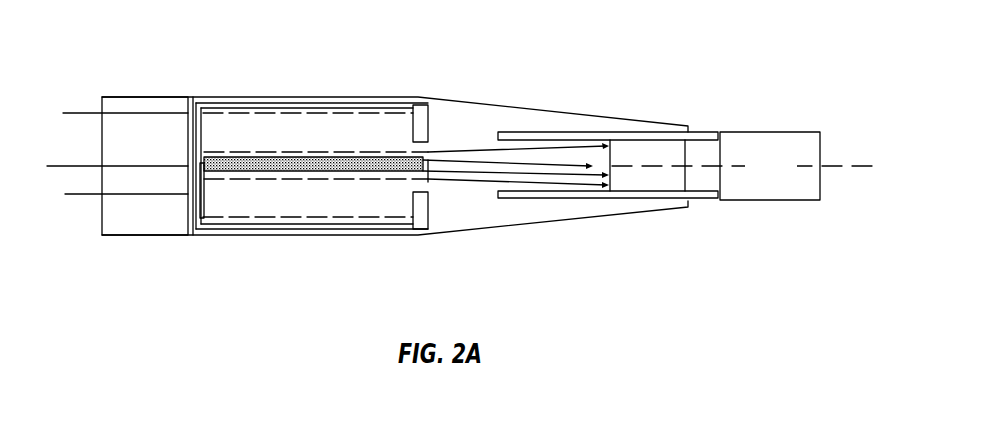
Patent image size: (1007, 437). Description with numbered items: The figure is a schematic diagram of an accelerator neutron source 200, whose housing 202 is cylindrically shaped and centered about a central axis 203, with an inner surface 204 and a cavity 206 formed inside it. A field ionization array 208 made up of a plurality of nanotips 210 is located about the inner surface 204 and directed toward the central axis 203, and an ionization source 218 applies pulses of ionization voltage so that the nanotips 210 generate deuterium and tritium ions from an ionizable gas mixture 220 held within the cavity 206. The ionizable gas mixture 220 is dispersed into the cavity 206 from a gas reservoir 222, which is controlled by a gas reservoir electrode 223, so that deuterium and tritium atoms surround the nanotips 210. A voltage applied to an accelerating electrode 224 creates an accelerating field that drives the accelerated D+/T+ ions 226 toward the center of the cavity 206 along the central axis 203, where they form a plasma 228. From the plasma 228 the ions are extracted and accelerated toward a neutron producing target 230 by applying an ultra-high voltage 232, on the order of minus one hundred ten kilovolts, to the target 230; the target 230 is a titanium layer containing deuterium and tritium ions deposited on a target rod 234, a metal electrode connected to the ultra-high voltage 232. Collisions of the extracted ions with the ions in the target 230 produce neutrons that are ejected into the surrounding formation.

The accelerator neutron source 200 is at (687, 49).
The housing 202 is at (213, 97).
The central axis 203 is at (847, 163).
The inner surface 204 is at (217, 230).
The cavity 206 is at (265, 211).
The field ionization array 208 is at (272, 220).
The nanotips 210 is at (277, 107).
The ionization source 218 is at (78, 112).
The ionizable gas mixture 220 is at (327, 199).
The gas reservoir 222 is at (187, 207).
The gas reservoir electrode 223 is at (120, 195).
The accelerating electrode 224 is at (82, 167).
The accelerated D+/T+ ions 226 is at (465, 152).
The plasma 228 is at (370, 158).
The neutron producing target 230 is at (637, 180).
The ultra-high voltage 232 is at (797, 188).
The target rod 234 is at (707, 182).